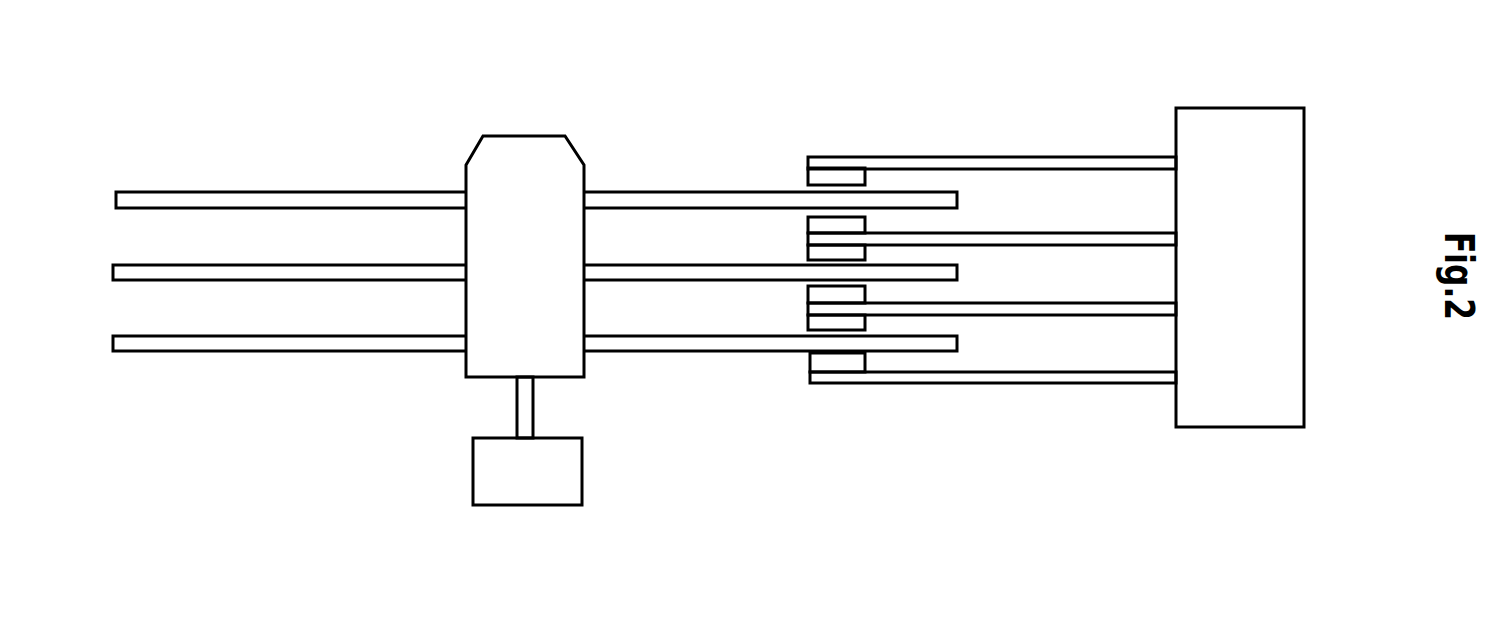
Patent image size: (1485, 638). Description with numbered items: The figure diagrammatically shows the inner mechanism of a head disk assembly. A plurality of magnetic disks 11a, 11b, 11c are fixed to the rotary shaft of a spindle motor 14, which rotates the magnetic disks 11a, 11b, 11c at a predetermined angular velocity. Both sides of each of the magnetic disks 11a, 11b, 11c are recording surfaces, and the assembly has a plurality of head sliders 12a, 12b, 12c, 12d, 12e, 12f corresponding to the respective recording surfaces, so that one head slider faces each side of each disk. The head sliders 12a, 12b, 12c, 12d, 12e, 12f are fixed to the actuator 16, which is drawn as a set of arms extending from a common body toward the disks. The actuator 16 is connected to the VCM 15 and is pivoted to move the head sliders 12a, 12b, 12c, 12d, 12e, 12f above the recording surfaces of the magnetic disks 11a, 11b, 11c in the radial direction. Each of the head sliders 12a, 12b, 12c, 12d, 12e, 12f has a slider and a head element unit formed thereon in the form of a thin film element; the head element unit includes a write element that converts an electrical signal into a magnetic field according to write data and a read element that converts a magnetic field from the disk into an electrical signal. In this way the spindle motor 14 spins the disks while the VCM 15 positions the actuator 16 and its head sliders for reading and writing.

The magnetic disk 11a is at (308, 191).
The magnetic disk 11b is at (283, 264).
The magnetic disk 11c is at (277, 336).
The head slider 12a is at (808, 172).
The head slider 12b is at (808, 224).
The head slider 12c is at (808, 250).
The head slider 12d is at (808, 293).
The head slider 12e is at (808, 322).
The head slider 12f is at (810, 364).
The spindle motor (SPM) 14 is at (585, 461).
The VCM 15 is at (1280, 107).
The actuator 16 is at (1056, 70).